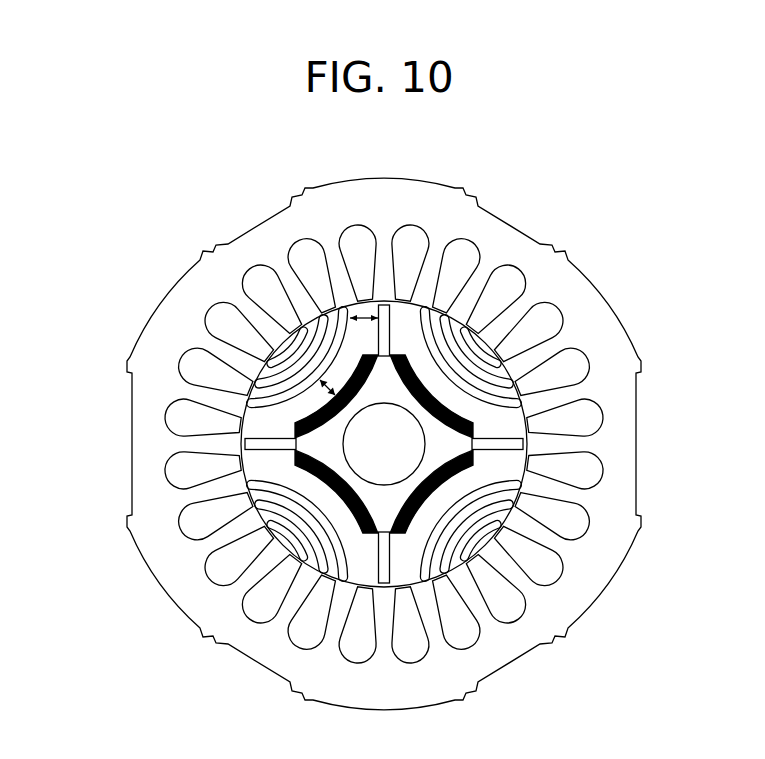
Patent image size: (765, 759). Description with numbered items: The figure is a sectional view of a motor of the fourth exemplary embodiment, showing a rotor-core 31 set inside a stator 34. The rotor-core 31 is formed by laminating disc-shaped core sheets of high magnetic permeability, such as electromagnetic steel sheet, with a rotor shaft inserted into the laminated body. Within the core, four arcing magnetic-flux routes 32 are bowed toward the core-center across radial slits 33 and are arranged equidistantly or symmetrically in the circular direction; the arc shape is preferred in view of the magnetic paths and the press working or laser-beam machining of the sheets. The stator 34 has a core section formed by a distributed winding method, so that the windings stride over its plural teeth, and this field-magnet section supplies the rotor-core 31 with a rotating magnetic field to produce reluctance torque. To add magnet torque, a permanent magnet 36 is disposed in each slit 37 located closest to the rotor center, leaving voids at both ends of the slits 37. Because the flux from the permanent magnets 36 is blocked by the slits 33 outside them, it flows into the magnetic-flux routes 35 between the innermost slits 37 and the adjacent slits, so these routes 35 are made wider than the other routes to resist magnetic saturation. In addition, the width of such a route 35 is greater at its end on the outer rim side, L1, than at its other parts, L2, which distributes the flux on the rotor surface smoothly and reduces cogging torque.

The rotor-core 31 is at (445, 443).
The magnetic-flux route 32 is at (479, 406).
The slit 33 is at (460, 362).
The stator 34 is at (585, 621).
The magnetic-flux route 35 is at (275, 422).
The permanent magnet 36 is at (335, 487).
The slit 37 is at (355, 562).
The width at the outer rim end of the magnetic-flux route L1 is at (366, 316).
The width at other parts of the magnetic-flux route L2 is at (333, 388).